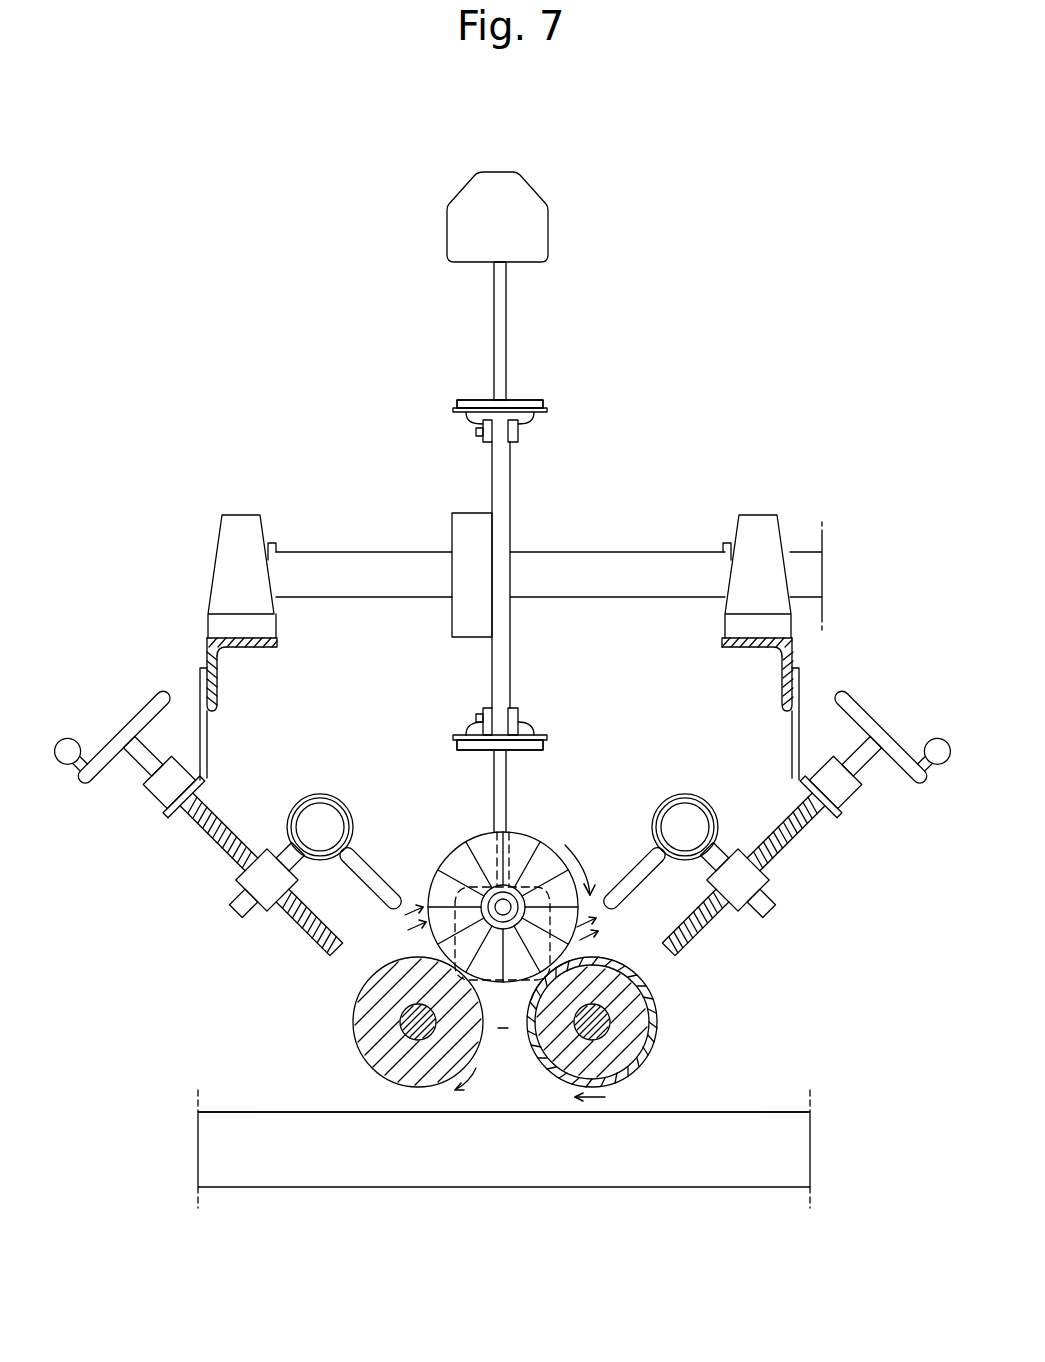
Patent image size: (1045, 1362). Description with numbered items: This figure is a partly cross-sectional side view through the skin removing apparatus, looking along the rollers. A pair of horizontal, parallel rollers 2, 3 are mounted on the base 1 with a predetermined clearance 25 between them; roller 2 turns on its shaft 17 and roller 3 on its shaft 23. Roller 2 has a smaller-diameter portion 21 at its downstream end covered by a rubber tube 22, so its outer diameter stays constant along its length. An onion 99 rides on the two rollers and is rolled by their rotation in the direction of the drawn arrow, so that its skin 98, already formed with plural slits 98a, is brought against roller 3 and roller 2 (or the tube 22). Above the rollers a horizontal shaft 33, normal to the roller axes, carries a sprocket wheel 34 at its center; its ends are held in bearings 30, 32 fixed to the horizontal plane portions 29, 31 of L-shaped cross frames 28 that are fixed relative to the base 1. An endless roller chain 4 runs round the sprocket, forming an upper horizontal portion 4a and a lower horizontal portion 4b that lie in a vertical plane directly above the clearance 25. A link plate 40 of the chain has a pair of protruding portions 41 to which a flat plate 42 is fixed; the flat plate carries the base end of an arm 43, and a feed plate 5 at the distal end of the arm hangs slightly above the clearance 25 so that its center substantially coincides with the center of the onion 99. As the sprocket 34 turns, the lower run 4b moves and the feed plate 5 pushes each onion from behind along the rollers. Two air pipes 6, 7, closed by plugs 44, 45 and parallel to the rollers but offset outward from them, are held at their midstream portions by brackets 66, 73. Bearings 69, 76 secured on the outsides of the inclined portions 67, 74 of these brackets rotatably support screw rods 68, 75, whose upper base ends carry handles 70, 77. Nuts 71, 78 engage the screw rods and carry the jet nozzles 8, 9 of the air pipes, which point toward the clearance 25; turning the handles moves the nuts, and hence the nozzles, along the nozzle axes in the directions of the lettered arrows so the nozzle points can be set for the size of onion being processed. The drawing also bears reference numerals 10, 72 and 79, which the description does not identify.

The base 1 is at (776, 1110).
The roller 2 is at (630, 997).
The roller 3 is at (385, 1027).
The roller chain 4 is at (480, 452).
The upper horizontal portion 4a is at (518, 446).
The lower horizontal portion 4b is at (518, 712).
The feed plate 5 is at (512, 218).
The air pipe 6 is at (689, 783).
The air pipe 7 is at (312, 774).
The jet nozzle 8 is at (642, 870).
The jet nozzle 9 is at (372, 862).
The base 10 is at (376, 1160).
The shaft 17 is at (612, 1022).
The smaller-diameter portion 21 is at (652, 1060).
The rubber tube 22 is at (618, 972).
The shaft 23 is at (378, 1058).
The clearance 25 is at (503, 1032).
The L-shaped cross frame 28 is at (798, 657).
The horizontal plane portion 29 is at (760, 642).
The bearing 30 is at (752, 540).
The horizontal plane portion 31 is at (238, 636).
The bearing 32 is at (245, 545).
The shaft 33 is at (652, 578).
The sprocket wheel 34 is at (508, 502).
The link plate 40 is at (482, 430).
The protruding portion 41 is at (470, 420).
The flat plate 42 is at (478, 406).
The arm 43 is at (502, 325).
The plug 44 is at (700, 798).
The plug 45 is at (330, 794).
The bracket 66 is at (806, 692).
The inclined portion 67 is at (838, 814).
The screw rod 68 is at (790, 855).
The bearing 69 is at (843, 800).
The handle 70 is at (868, 738).
The nut 71 is at (738, 896).
The arm 72 is at (716, 858).
The bracket 73 is at (197, 690).
The inclined portion 74 is at (183, 808).
The screw rod 75 is at (220, 845).
The bearing 76 is at (162, 790).
The handle 77 is at (138, 738).
The nut 78 is at (268, 896).
The arm 79 is at (280, 855).
The skin 98 is at (522, 882).
The slit 98a is at (478, 848).
The onion 99 is at (574, 833).